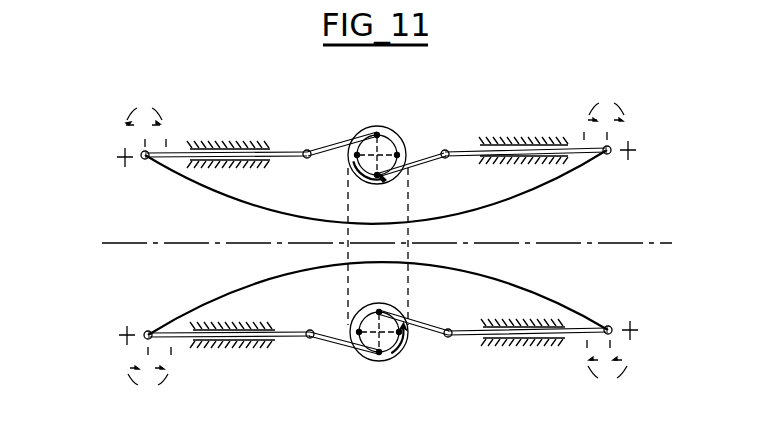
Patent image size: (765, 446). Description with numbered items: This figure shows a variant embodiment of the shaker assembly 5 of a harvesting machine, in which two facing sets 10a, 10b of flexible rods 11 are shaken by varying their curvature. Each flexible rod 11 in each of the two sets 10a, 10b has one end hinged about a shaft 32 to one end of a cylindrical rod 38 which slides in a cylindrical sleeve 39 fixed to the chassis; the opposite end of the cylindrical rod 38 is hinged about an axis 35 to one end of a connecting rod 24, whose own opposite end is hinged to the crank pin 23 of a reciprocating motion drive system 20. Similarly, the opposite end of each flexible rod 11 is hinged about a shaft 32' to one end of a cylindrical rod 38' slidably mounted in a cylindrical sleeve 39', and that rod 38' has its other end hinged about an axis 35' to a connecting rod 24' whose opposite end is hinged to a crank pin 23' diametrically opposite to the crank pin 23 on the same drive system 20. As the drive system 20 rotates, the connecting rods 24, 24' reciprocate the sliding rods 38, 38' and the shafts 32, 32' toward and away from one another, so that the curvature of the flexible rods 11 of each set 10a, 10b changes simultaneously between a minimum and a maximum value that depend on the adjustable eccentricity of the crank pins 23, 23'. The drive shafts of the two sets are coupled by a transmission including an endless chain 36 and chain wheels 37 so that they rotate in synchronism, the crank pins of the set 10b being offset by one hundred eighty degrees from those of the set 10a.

The shaker assembly 5 is at (120, 222).
The set of flexible rods 10a is at (548, 197).
The set of flexible rods 10b is at (571, 297).
The flexible rod 11 is at (494, 203).
The connecting rod and crank drive system 20 is at (441, 103).
The crank pin 23 is at (386, 247).
The crank pin 23' is at (408, 244).
The connecting rod 24 is at (336, 257).
The connecting rod 24' is at (424, 244).
The shaft 32 is at (129, 245).
The shaft 32' is at (639, 240).
The axis 35 is at (301, 224).
The axis 35' is at (465, 244).
The endless chain 36 is at (347, 234).
The chain wheel 37 is at (364, 131).
The cylindrical rod 38 is at (227, 254).
The cylindrical rod 38' is at (526, 247).
The cylindrical sleeve 39 is at (231, 243).
The cylindrical sleeve 39' is at (523, 222).